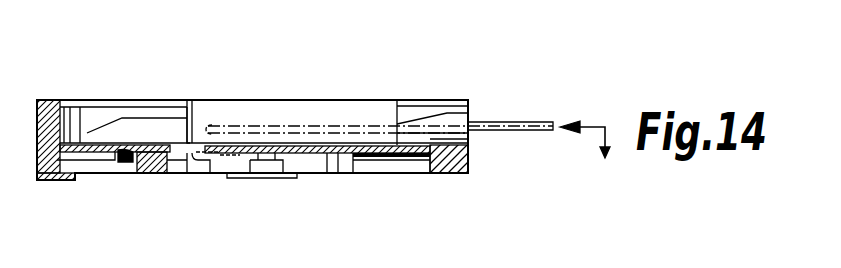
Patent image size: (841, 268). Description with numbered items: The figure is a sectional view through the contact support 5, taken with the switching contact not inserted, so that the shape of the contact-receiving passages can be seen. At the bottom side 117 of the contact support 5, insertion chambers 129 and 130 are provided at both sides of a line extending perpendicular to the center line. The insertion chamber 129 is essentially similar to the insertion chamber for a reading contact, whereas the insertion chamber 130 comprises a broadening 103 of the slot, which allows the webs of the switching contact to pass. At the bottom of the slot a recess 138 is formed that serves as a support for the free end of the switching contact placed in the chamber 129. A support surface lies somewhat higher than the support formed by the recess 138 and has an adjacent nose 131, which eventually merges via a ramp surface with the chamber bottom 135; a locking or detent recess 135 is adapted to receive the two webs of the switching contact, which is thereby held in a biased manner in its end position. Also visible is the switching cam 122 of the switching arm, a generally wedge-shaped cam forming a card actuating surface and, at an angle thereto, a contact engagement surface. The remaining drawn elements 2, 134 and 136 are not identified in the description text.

The axis of needle 2 is at (516, 133).
The contact support 5 is at (278, 88).
The broadening of the slot 103 is at (140, 170).
The bottom side of the contact support 117 is at (443, 172).
The switching cam 122 is at (182, 142).
The insertion chamber 129 is at (82, 168).
The insertion chamber 130 is at (410, 163).
The nose 131 is at (292, 160).
The sealing lip 134 is at (118, 140).
The chamber bottom / locking or detent recess 135 is at (327, 157).
The projection 136 is at (248, 178).
The recess 138 is at (210, 170).